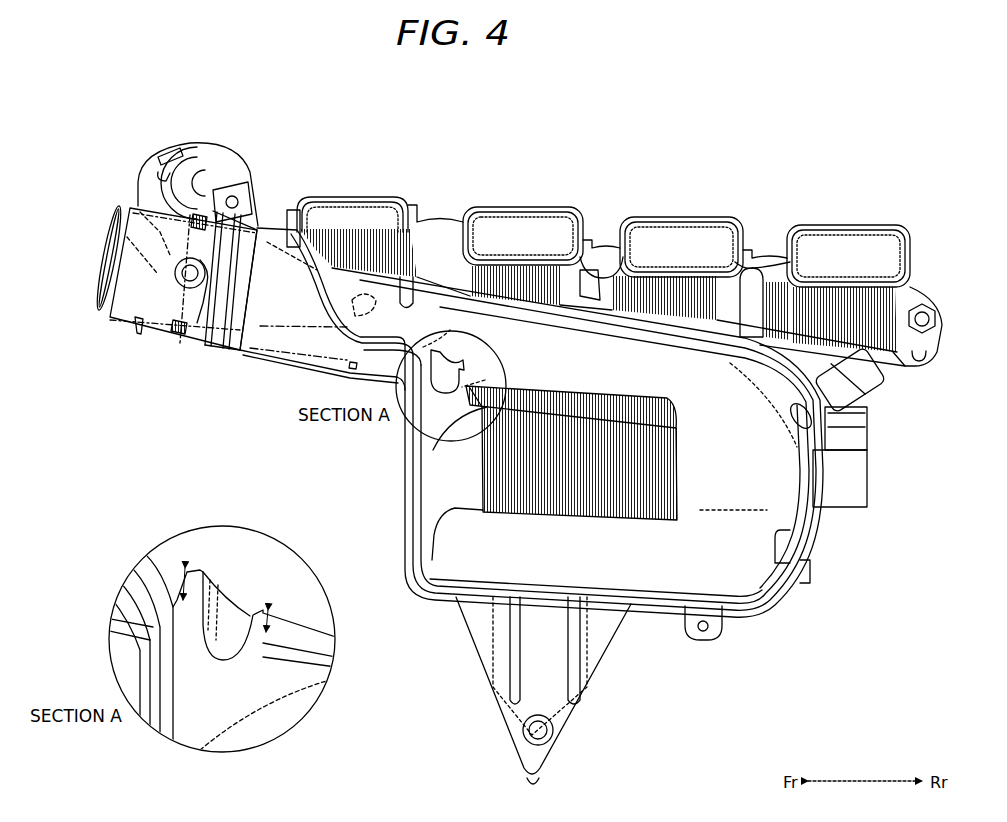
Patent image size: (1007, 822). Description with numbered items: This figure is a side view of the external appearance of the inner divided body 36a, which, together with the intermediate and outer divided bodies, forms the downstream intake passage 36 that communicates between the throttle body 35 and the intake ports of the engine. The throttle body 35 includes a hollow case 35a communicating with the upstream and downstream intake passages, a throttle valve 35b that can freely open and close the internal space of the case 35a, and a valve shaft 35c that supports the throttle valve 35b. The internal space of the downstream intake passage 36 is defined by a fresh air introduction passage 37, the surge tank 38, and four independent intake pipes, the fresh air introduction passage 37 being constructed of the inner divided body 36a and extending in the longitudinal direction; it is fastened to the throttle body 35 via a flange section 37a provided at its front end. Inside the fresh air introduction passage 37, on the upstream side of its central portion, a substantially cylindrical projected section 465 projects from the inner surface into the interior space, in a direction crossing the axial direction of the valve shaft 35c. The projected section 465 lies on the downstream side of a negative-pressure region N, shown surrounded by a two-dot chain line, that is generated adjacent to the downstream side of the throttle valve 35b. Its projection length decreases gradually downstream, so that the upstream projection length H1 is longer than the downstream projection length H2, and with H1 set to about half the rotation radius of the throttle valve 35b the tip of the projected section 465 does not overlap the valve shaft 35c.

The throttle body 35 is at (195, 142).
The hollow case 35a is at (115, 313).
The throttle valve 35b is at (177, 303).
The valve shaft 35c is at (120, 231).
The downstream intake passage 36 is at (614, 285).
The inner divided body 36a is at (673, 210).
The fresh air introduction passage 37 is at (630, 378).
The flange section 37a is at (233, 350).
The surge tank 38 is at (697, 565).
The projected section 465 is at (457, 363).
The projection length on the upstream side H1 is at (178, 598).
The projection length on the downstream side H2 is at (283, 578).
The negative-pressure region N is at (292, 305).